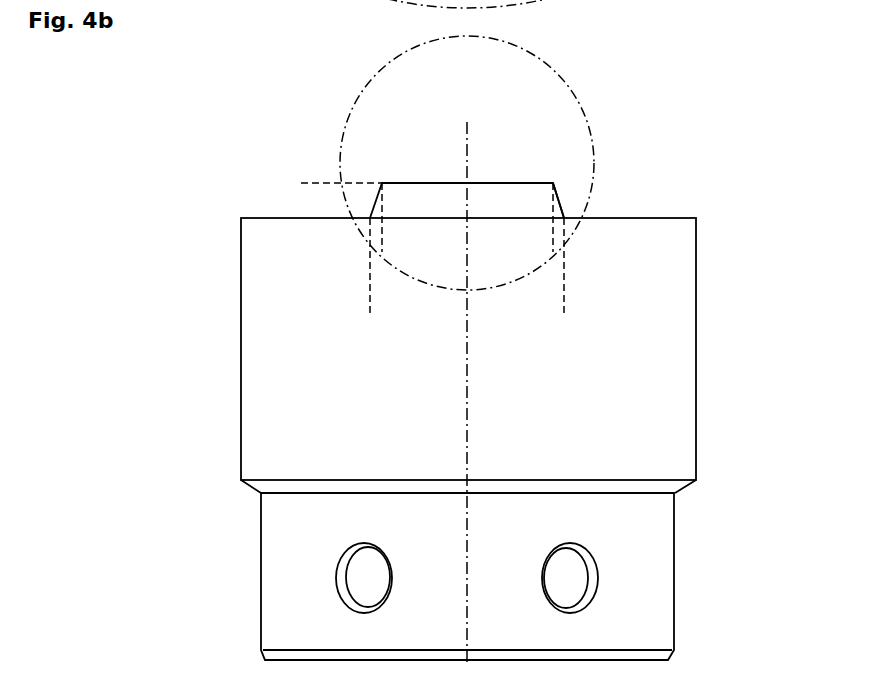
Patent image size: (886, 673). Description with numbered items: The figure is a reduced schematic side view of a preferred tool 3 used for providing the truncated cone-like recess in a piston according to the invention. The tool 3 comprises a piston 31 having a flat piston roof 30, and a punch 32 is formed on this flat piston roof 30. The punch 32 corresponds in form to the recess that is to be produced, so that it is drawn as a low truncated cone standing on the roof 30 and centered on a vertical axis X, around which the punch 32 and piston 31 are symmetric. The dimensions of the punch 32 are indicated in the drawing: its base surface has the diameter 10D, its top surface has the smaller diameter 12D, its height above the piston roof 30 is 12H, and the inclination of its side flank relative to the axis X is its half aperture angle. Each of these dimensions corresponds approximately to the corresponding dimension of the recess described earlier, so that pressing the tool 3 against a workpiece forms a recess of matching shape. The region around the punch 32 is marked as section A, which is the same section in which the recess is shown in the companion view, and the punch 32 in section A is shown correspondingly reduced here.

The tool 3 is at (218, 144).
The flat piston roof 30 is at (528, 313).
The piston 31 is at (670, 348).
The punch 32 is at (407, 194).
The section A is at (570, 92).
The central axis X is at (467, 380).
The height 12H is at (301, 155).
The diameter of top surface 12D is at (553, 245).
The diameter of base surface 10D is at (370, 306).